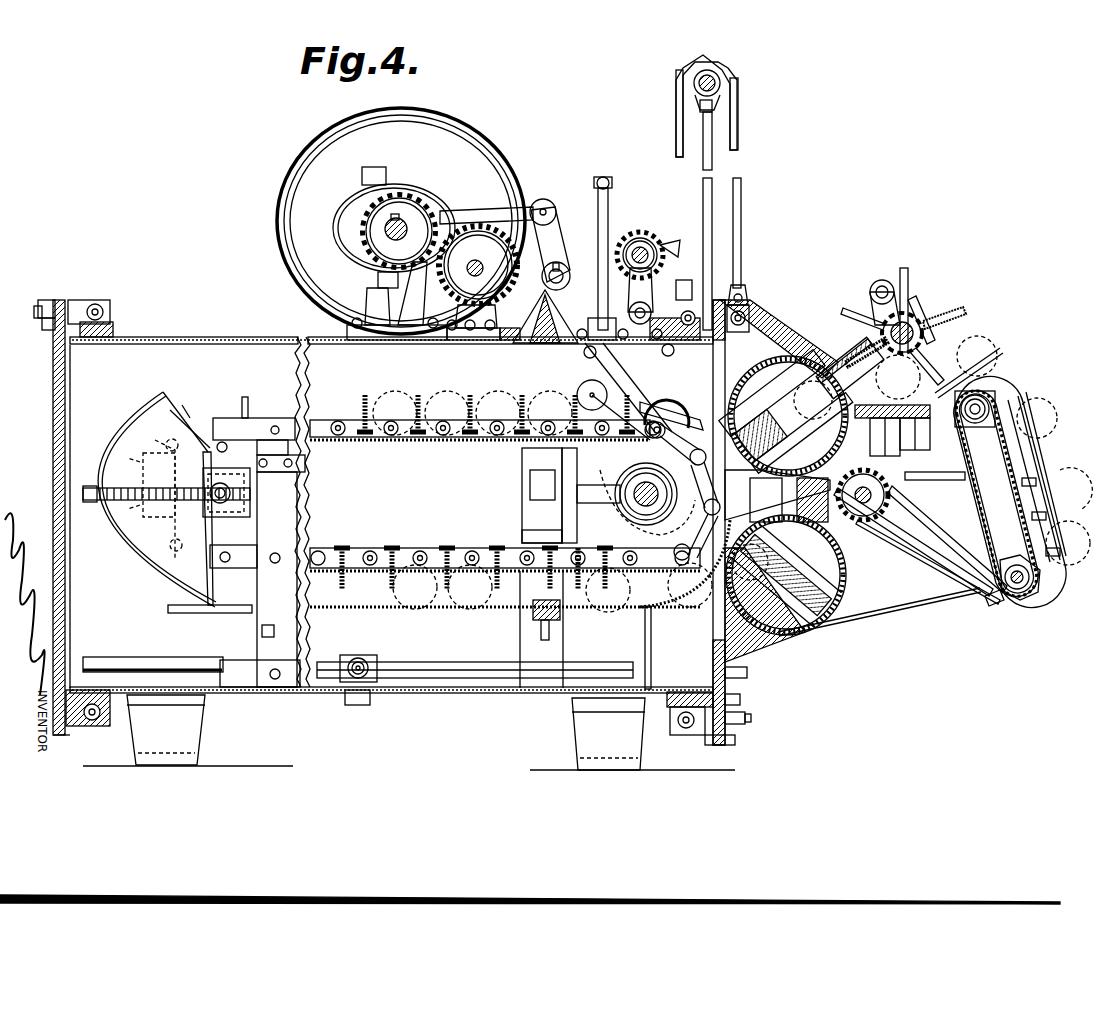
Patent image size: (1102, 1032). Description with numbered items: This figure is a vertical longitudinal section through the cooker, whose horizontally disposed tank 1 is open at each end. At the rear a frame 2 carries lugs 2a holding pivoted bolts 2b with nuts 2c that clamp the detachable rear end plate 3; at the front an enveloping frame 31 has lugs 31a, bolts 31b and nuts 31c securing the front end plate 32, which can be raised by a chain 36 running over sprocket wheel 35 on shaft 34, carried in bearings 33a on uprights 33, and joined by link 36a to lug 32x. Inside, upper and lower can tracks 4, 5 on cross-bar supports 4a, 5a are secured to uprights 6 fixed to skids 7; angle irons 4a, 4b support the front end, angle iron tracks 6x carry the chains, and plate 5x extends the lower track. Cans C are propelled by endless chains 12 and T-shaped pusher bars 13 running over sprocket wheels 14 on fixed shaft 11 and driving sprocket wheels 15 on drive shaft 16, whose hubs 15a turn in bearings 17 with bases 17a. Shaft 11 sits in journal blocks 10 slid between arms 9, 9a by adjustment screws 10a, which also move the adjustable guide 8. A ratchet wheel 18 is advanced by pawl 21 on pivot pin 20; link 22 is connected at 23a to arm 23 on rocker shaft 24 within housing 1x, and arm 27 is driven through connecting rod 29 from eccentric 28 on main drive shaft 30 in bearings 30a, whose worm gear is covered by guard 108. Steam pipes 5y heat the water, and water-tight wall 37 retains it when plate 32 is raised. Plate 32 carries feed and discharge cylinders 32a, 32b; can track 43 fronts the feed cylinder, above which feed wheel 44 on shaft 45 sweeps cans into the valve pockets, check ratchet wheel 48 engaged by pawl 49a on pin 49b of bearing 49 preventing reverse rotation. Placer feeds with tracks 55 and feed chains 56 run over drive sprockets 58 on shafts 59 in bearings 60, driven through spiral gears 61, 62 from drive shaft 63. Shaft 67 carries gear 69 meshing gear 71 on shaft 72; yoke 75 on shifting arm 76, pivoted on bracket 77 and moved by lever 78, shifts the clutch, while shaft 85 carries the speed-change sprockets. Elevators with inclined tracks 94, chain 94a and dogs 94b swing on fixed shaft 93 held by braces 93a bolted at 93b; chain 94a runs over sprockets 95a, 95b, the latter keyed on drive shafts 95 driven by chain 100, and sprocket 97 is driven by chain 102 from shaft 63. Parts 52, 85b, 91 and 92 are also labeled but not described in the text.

The tank 1 is at (198, 338).
The frame 2 is at (112, 325).
The lugs 2a is at (92, 305).
The bolts 2b is at (38, 318).
The nuts 2c is at (50, 300).
The rear end plate 3 is at (55, 392).
The upper can track 4 is at (378, 442).
The cross-bar support 4a is at (285, 438).
The angle iron 4b is at (525, 534).
The lower can track 5 is at (385, 608).
The cross-bar support 5a is at (268, 633).
The plate 5x is at (160, 630).
The steam pipes 5y is at (100, 657).
The uprights 6 is at (312, 540).
The angle iron tracks 6x is at (578, 572).
The angle iron skids 7 is at (250, 690).
The adjustable guide 8 is at (140, 565).
The arm 9 is at (222, 445).
The arm 9a is at (205, 545).
The journal blocks 10 is at (300, 478).
The adjustment screws 10a is at (90, 486).
The sprocket shaft 11 is at (245, 490).
The endless roller chains 12 is at (447, 442).
The T-shaped pusher bars 13 is at (520, 400).
The sprocket wheels 14 is at (180, 420).
The driving sprocket wheels 15 is at (672, 420).
The hubs 15a is at (575, 495).
The drive shaft 16 is at (736, 491).
The bearings 17 is at (647, 506).
The bases 17a is at (580, 515).
The ratchet wheel 18 is at (609, 590).
The pivot pin 20 is at (666, 402).
The pawl 21 is at (640, 420).
The link 22 is at (612, 390).
The arm 23 is at (580, 355).
The pivotal connection 23a is at (578, 392).
The rocker shaft 24 is at (560, 262).
The arm 27 is at (545, 200).
The eccentric 28 is at (338, 227).
The connecting rod 29 is at (500, 210).
The main drive shaft 30 is at (403, 222).
The bearings 30a is at (374, 304).
The enveloping frame 31 is at (668, 700).
The lugs 31a is at (712, 742).
The bolts 31b is at (748, 718).
The nuts 31c is at (742, 700).
The front end plate 32 is at (752, 314).
The feed cylinder 32a is at (848, 350).
The discharge cylinder 32b is at (810, 636).
The lug 32x is at (750, 318).
The uprights 33 is at (714, 204).
The bearings 33a is at (722, 90).
The shaft 34 is at (698, 83).
The sprocket wheel 35 is at (720, 103).
The chain 36 is at (740, 150).
The link 36a is at (742, 296).
The water-tight wall 37 is at (645, 645).
The can track 43 is at (935, 360).
The feed wheel 44 is at (948, 312).
The shaft 45 is at (914, 312).
The check ratchet wheel 48 is at (880, 336).
The bearing 49 is at (813, 400).
The pawl 49a is at (908, 290).
The pin 49b is at (882, 280).
The drum 52 is at (788, 416).
The can tracks 55 is at (977, 356).
The endless feed chains 56 is at (965, 480).
The drive sprockets 58 is at (819, 483).
The shafts 59 is at (920, 455).
The bearings 60 is at (935, 432).
The spiral gears 61 is at (801, 433).
The spiral gears 62 is at (930, 545).
The drive shaft 63 is at (864, 520).
The shaft 67 is at (686, 355).
The gear 69 is at (675, 285).
The gear 71 is at (660, 250).
The shaft 72 is at (642, 246).
The yoke 75 is at (628, 236).
The shifting arm 76 is at (598, 210).
The bracket 77 is at (545, 316).
The clutch shifting lever 78 is at (604, 176).
The shaft 85 is at (464, 257).
The pin 85b is at (468, 398).
The gear 91 is at (477, 235).
The lug 92 is at (398, 196).
The shaft 93 is at (1030, 590).
The braces 93a is at (882, 612).
The bolts 93b is at (747, 673).
The inclined angle iron tracks 94 is at (1040, 462).
The endless chain 94a is at (1040, 486).
The dogs 94b is at (1048, 512).
The drive shafts 95 is at (992, 390).
The sprockets 95a is at (1017, 592).
The sprockets 95b is at (990, 408).
The sprocket 97 is at (988, 598).
The chain 100 is at (947, 539).
The chain 102 is at (905, 555).
The guard 108 is at (300, 190).
The steam-tight housing 1x is at (518, 315).
The cans C is at (732, 494).